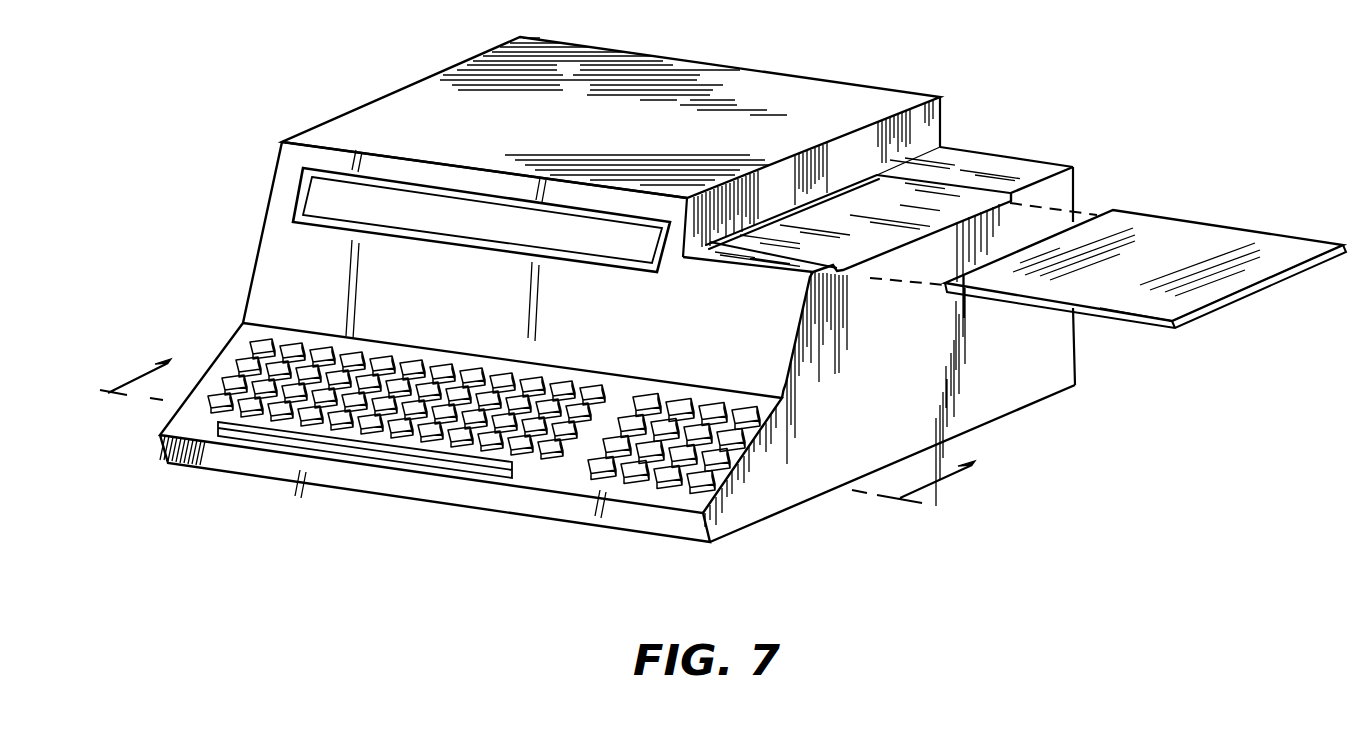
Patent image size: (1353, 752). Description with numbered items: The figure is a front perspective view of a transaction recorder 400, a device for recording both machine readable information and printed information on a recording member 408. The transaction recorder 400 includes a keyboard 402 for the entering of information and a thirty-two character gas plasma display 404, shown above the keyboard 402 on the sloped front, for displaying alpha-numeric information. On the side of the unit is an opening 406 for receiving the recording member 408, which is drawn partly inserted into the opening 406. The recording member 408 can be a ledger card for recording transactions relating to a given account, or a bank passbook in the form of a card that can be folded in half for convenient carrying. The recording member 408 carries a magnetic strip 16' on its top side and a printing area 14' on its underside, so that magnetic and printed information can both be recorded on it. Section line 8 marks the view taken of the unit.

The transaction recorder 400 is at (1022, 120).
The keyboard 402 is at (543, 462).
The gas plasma display 404 is at (313, 193).
The opening 406 is at (867, 177).
The recording member 408 is at (1217, 222).
The printing area 14' is at (1257, 290).
The magnetic strip 16' is at (1134, 335).
The section line 8- 8 is at (551, 418).